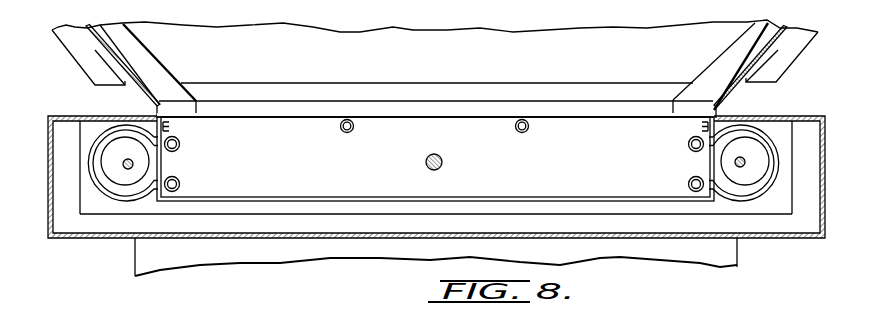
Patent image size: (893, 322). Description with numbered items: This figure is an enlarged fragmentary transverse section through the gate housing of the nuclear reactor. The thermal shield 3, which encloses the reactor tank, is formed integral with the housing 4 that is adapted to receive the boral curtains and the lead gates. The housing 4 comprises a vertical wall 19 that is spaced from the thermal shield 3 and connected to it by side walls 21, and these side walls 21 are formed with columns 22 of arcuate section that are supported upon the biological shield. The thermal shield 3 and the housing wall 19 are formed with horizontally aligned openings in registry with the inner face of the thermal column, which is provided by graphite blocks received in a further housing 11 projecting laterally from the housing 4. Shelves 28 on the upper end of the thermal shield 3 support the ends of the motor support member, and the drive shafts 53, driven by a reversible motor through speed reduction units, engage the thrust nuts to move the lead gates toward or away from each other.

The thermal shield 3 is at (95, 50).
The housing 4 is at (80, 242).
The housing 11 is at (146, 253).
The vertical wall 19 is at (302, 197).
The side walls 21 is at (155, 200).
The columns 22 is at (108, 181).
The shelves 28 is at (64, 131).
The drive shafts 53 is at (141, 148).